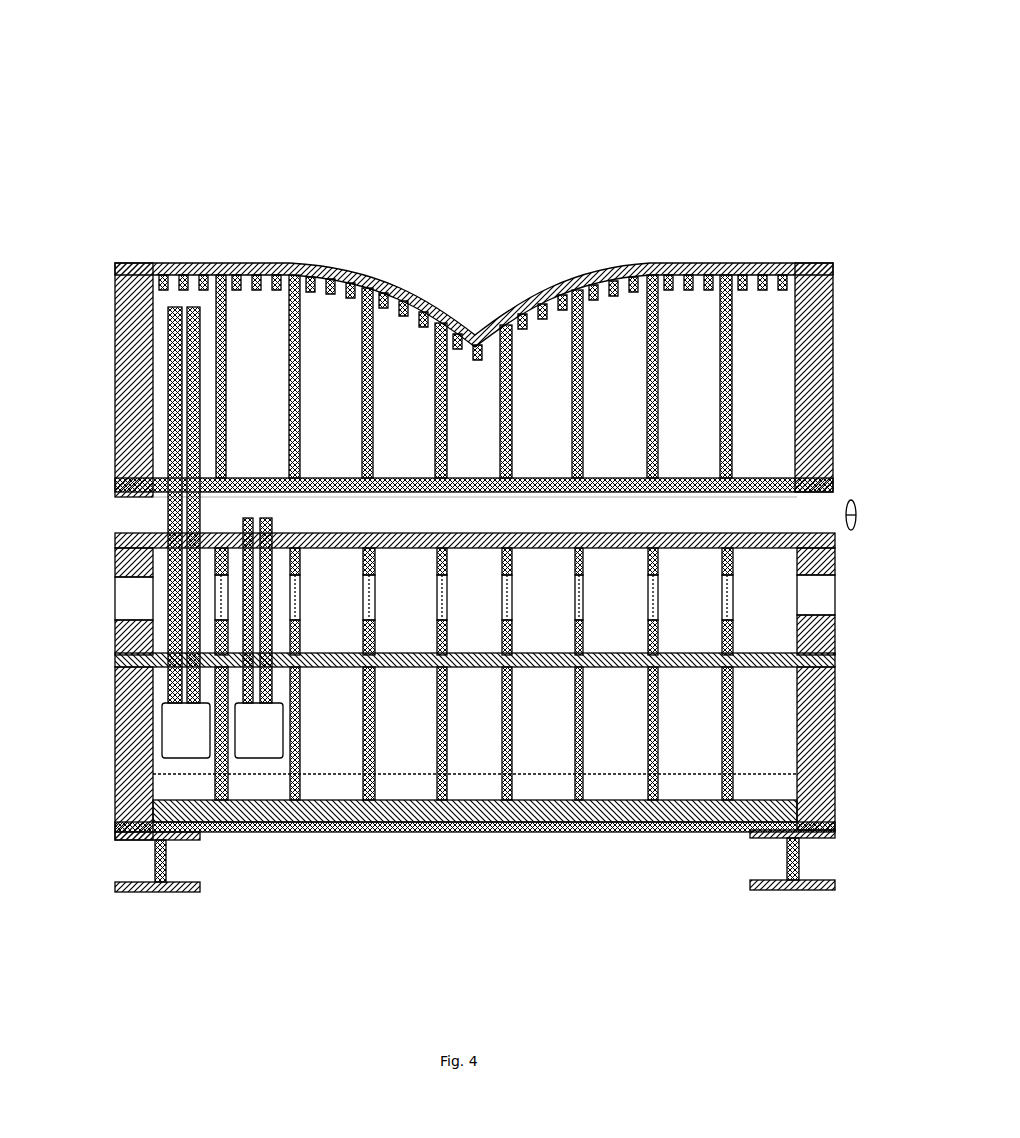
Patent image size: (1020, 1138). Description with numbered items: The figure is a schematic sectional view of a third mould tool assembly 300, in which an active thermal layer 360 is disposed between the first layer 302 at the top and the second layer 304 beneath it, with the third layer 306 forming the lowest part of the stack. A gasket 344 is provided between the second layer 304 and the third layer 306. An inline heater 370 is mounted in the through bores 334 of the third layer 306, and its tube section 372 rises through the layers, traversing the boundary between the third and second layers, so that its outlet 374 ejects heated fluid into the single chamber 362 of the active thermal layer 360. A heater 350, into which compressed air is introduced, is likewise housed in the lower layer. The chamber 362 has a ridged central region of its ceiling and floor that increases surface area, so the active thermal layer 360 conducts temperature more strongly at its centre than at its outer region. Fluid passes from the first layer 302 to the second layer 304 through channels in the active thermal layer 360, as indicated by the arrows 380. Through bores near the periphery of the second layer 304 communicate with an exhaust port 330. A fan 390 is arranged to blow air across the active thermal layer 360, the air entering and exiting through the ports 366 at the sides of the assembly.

The mould tool assembly 300 is at (781, 88).
The first layer 302 is at (101, 358).
The second layer 304 is at (101, 600).
The third layer 306 is at (101, 700).
The exhaust port 330 is at (816, 595).
The through bore 334 is at (331, 733).
The gasket 344 is at (835, 661).
The heater 350 is at (186, 532).
The active thermal layer 360 is at (93, 528).
The single chamber 362 is at (475, 506).
The port 366 is at (115, 495).
The inline heater 370 is at (259, 638).
The tube section 372 is at (281, 578).
The outlet 374 is at (262, 518).
The arrows 380 is at (543, 476).
The fan 390 is at (857, 522).